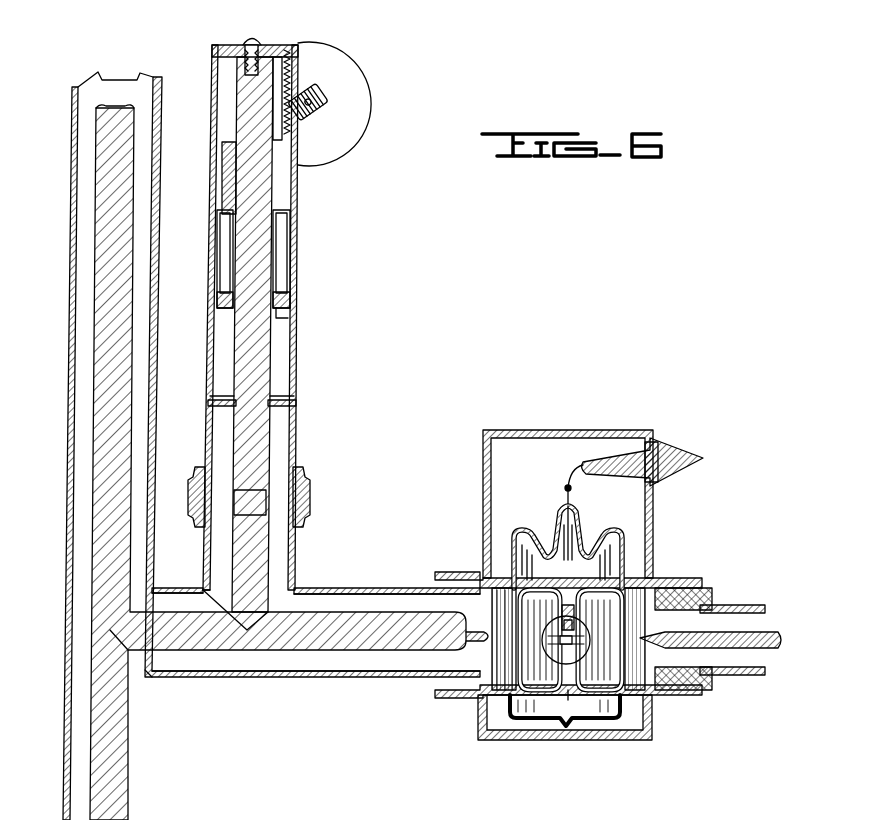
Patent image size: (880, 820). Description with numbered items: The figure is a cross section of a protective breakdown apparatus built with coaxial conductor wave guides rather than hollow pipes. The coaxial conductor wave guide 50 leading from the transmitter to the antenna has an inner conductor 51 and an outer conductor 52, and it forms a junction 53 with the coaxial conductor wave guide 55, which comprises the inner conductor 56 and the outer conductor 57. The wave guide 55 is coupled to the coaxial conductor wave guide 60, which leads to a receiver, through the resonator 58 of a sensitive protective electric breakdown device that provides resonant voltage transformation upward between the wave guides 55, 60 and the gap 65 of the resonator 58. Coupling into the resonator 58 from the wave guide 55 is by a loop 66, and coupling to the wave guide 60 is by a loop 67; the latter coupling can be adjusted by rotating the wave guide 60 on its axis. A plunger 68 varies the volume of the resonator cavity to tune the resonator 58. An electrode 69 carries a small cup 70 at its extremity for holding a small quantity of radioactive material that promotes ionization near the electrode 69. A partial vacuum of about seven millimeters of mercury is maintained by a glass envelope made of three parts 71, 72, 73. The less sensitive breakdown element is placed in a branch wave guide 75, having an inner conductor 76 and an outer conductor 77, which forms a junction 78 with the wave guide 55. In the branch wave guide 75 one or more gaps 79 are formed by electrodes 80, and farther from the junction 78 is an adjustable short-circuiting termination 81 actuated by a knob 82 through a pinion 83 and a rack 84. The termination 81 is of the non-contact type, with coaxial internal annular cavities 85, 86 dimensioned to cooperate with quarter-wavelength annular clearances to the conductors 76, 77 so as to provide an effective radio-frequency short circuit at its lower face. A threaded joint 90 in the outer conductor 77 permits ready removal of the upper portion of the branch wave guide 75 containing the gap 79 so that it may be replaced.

The coaxial conductor wave guide 50 is at (86, 196).
The inner conductor 51 is at (100, 151).
The outer conductor 52 is at (76, 128).
The junction 53 is at (152, 671).
The coaxial conductor wave guide 55 is at (322, 674).
The inner conductor 56 is at (300, 640).
The outer conductor 57 is at (226, 674).
The resonator 58 is at (502, 586).
The coaxial conductor wave guide 60 is at (760, 622).
The gap 65 is at (585, 640).
The loop 66 is at (452, 680).
The loop 67 is at (635, 660).
The plunger 68 is at (576, 628).
The electrode 69 is at (565, 568).
The cup 70 is at (584, 603).
The glass envelope part 71 is at (578, 510).
The glass envelope part 72 is at (514, 614).
The glass envelope part 73 is at (590, 714).
The branch wave guide 75 is at (282, 440).
The inner conductor 76 is at (237, 330).
The outer conductor 77 is at (297, 374).
The junction 78 is at (209, 586).
The gap 79 is at (298, 392).
The electrodes 80 is at (212, 403).
The adjustable short-circuiting termination 81 is at (286, 312).
The knob 82 is at (304, 166).
The pinion 83 is at (318, 115).
The rack 84 is at (290, 155).
The annular cavity 85 is at (283, 276).
The annular cavity 86 is at (280, 252).
The threaded joint 90 is at (265, 500).